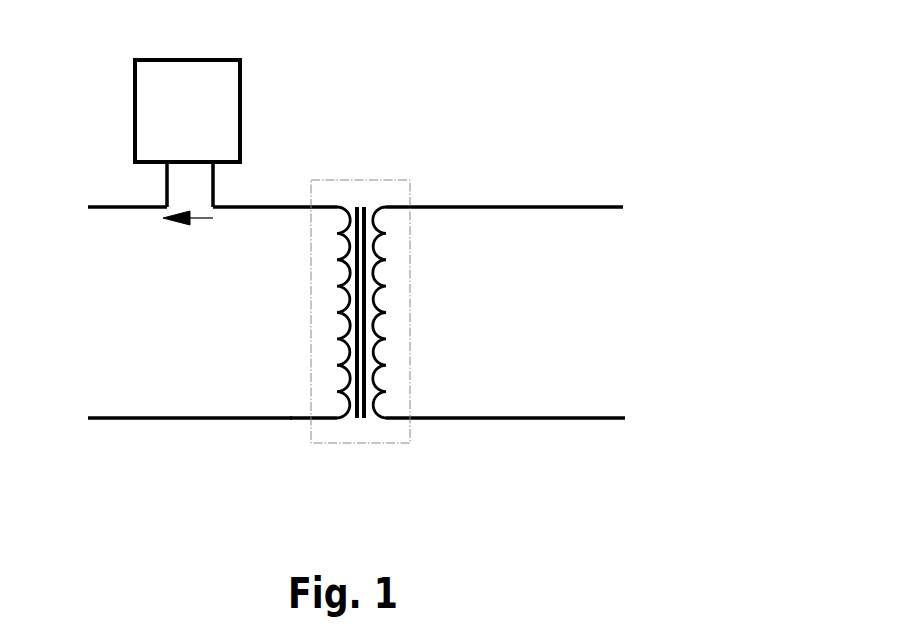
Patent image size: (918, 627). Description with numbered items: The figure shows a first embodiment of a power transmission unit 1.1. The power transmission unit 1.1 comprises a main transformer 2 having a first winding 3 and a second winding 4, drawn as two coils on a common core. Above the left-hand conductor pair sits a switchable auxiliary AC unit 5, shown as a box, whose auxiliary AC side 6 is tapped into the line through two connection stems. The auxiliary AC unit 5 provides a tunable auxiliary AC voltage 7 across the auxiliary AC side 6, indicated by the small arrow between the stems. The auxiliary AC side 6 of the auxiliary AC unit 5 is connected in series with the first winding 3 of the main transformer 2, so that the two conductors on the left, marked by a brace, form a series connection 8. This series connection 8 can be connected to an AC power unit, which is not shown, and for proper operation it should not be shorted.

The power transmission unit 1.1 is at (464, 129).
The main transformer 2 is at (365, 316).
The first winding 3 is at (342, 420).
The second winding 4 is at (380, 420).
The auxiliary AC unit 5 is at (202, 58).
The auxiliary AC side 6 is at (190, 177).
The auxiliary AC voltage 7 is at (197, 218).
The series connection 8 is at (123, 208).